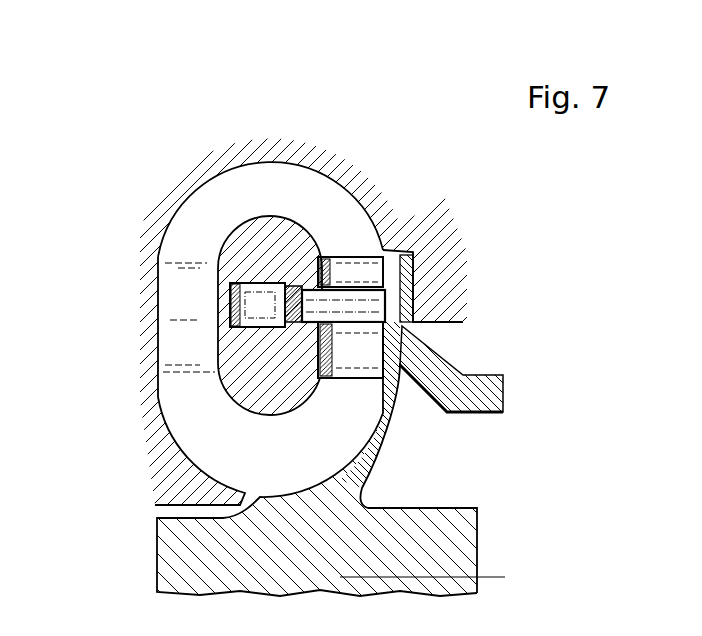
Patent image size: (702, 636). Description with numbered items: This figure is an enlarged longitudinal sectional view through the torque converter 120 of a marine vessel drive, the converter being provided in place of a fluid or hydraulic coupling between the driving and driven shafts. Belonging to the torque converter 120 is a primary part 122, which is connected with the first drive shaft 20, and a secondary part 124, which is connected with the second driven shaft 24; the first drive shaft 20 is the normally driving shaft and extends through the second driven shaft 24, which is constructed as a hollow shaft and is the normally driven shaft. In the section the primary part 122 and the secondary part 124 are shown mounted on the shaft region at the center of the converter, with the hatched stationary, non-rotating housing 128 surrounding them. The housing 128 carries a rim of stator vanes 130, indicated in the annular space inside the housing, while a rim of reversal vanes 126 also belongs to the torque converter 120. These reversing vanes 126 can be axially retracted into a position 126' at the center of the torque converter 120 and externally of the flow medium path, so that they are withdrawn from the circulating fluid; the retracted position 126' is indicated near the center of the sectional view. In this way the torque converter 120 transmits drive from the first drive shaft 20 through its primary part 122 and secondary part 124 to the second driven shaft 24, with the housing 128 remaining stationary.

The torque converter 120 is at (291, 120).
The primary part 122 is at (367, 353).
The secondary part 124 is at (407, 246).
The rim of reversal vanes 126 is at (397, 287).
The retracted position of reversal vanes 126' is at (188, 270).
The stationary housing 128 is at (153, 417).
The rim of stator vanes 130 is at (177, 335).
The second driven shaft 24 is at (503, 395).
The first drive shaft 20 is at (468, 550).